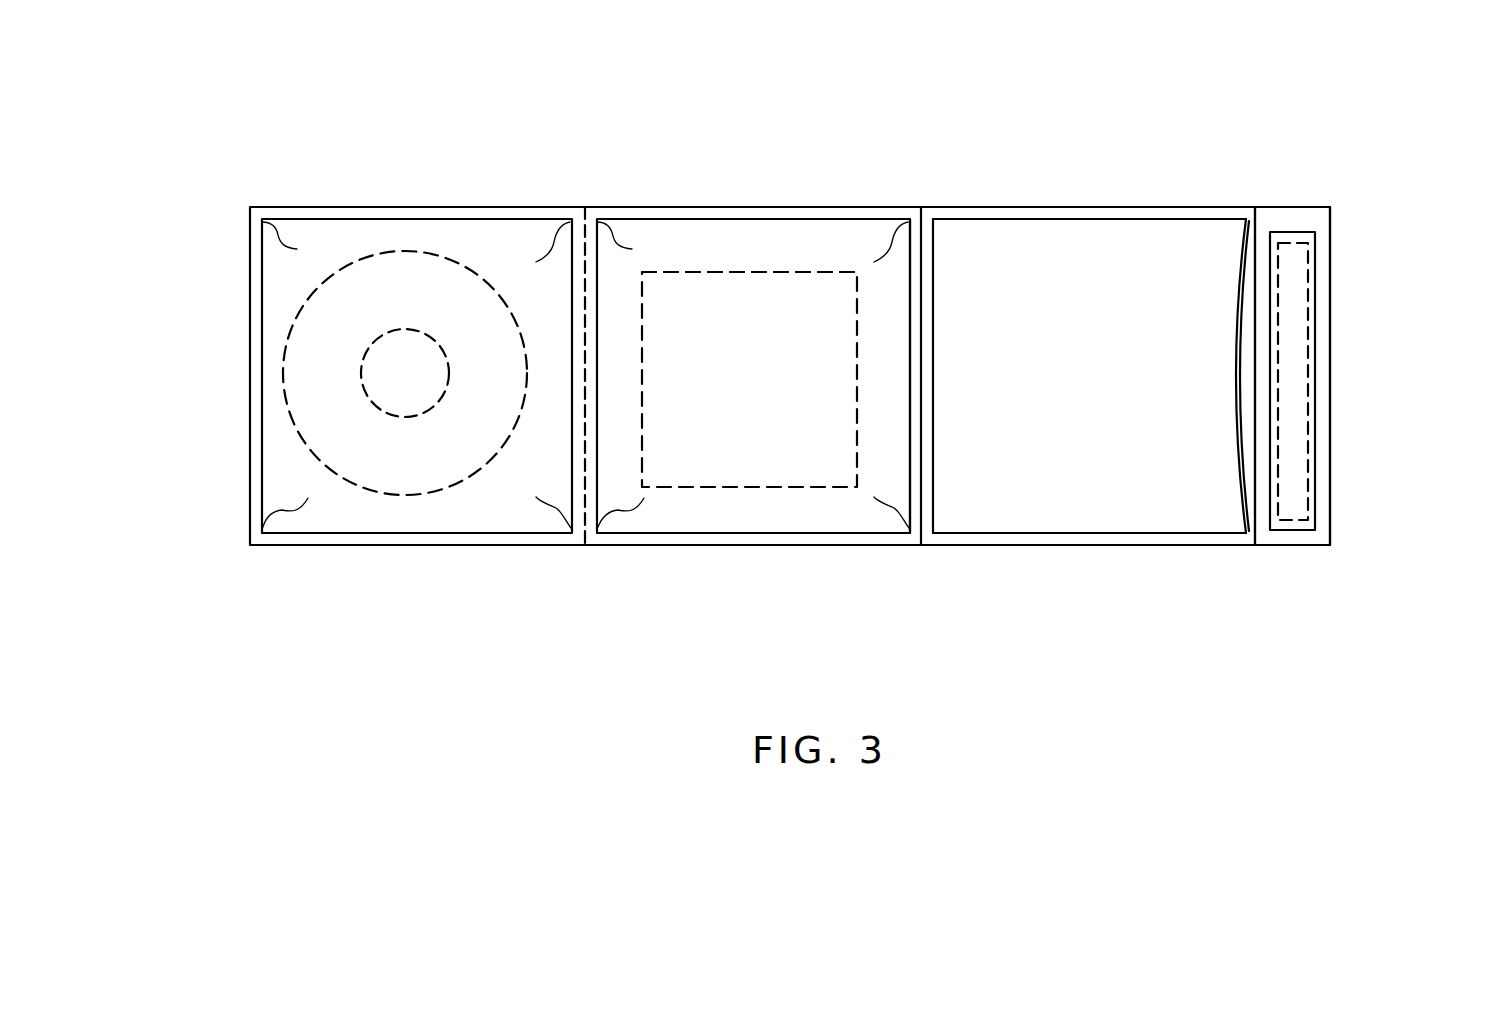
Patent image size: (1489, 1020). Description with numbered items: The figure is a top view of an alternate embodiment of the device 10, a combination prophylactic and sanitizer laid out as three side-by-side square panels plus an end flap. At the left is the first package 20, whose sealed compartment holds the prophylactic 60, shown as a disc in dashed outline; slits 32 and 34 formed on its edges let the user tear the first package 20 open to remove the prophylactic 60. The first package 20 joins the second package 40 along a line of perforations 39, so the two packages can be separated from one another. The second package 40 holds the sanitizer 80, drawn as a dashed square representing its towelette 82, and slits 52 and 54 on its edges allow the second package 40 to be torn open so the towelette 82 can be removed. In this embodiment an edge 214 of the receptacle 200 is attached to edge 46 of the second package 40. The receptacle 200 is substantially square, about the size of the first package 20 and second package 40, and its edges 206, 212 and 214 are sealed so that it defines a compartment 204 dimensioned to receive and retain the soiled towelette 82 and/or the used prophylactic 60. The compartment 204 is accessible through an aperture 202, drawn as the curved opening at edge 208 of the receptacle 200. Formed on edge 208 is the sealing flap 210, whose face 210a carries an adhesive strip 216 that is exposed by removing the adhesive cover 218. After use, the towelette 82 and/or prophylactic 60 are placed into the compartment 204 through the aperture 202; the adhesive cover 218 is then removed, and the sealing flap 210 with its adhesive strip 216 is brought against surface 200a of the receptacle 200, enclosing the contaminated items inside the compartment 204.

The device 10 is at (388, 137).
The first package 20 is at (277, 285).
The slit 32 is at (272, 210).
The slit 34 is at (268, 545).
The perforations 39 is at (566, 208).
The second package 40 is at (770, 240).
The edge 46 is at (910, 310).
The slit 52 is at (886, 228).
The slit 54 is at (877, 545).
The prophylactic 60 is at (397, 457).
The sanitizer 80 is at (730, 458).
The towelette 82 is at (680, 318).
The receptacle 200 is at (1087, 256).
The surface 200a is at (1168, 245).
The aperture 202 is at (1248, 467).
The compartment 204 is at (1153, 505).
The edge 206 is at (1040, 218).
The edge 208 is at (1256, 230).
The sealing flap 210 is at (1323, 222).
The face 210a is at (1325, 535).
The edge 212 is at (1023, 547).
The edge 214 is at (927, 277).
The adhesive strip 216 is at (1297, 285).
The adhesive cover 218 is at (1312, 443).